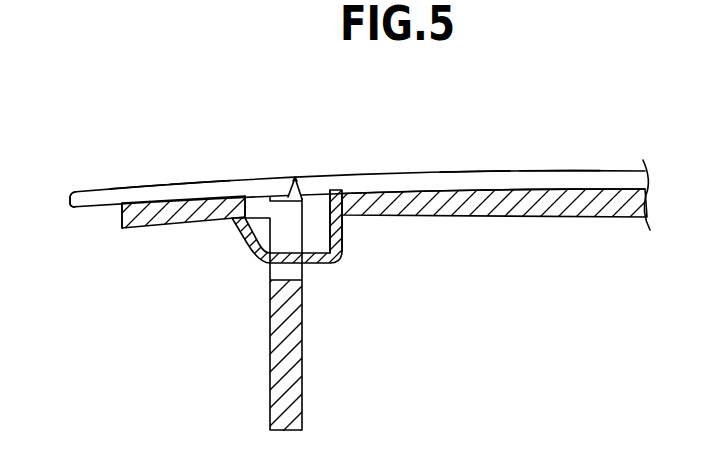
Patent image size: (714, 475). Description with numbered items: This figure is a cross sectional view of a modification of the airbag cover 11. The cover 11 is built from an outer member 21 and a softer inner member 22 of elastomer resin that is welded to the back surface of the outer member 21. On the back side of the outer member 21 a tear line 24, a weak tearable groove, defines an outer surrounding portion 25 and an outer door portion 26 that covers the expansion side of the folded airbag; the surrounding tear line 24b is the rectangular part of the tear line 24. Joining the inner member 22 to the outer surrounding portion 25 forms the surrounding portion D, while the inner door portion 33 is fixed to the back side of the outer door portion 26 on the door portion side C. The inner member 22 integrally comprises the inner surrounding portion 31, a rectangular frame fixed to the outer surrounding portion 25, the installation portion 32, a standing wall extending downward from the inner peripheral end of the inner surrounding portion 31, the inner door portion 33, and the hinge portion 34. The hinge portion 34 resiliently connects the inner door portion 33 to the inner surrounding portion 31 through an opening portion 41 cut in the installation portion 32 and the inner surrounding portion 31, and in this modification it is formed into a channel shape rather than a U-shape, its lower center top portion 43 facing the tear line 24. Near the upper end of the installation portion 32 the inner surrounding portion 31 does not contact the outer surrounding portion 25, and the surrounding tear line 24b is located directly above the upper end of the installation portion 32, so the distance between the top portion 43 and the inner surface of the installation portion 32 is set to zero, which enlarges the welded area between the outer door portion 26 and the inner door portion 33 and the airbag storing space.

The cover 11 is at (148, 104).
The outer member 21 is at (83, 202).
The inner member 22 is at (121, 213).
The tear line 24 is at (292, 176).
The surrounding tear line 24b is at (299, 176).
The outer surrounding portion 25 is at (192, 184).
The outer door portion 26 is at (541, 170).
The inner surrounding portion 31 is at (173, 220).
The installation portion 32 is at (284, 394).
The inner door portion 33 is at (540, 218).
The hinge portion 34 is at (344, 258).
The opening portion 41 is at (268, 266).
The top portion 43 is at (306, 263).
The door portion side C is at (471, 172).
The surrounding portion D is at (140, 185).